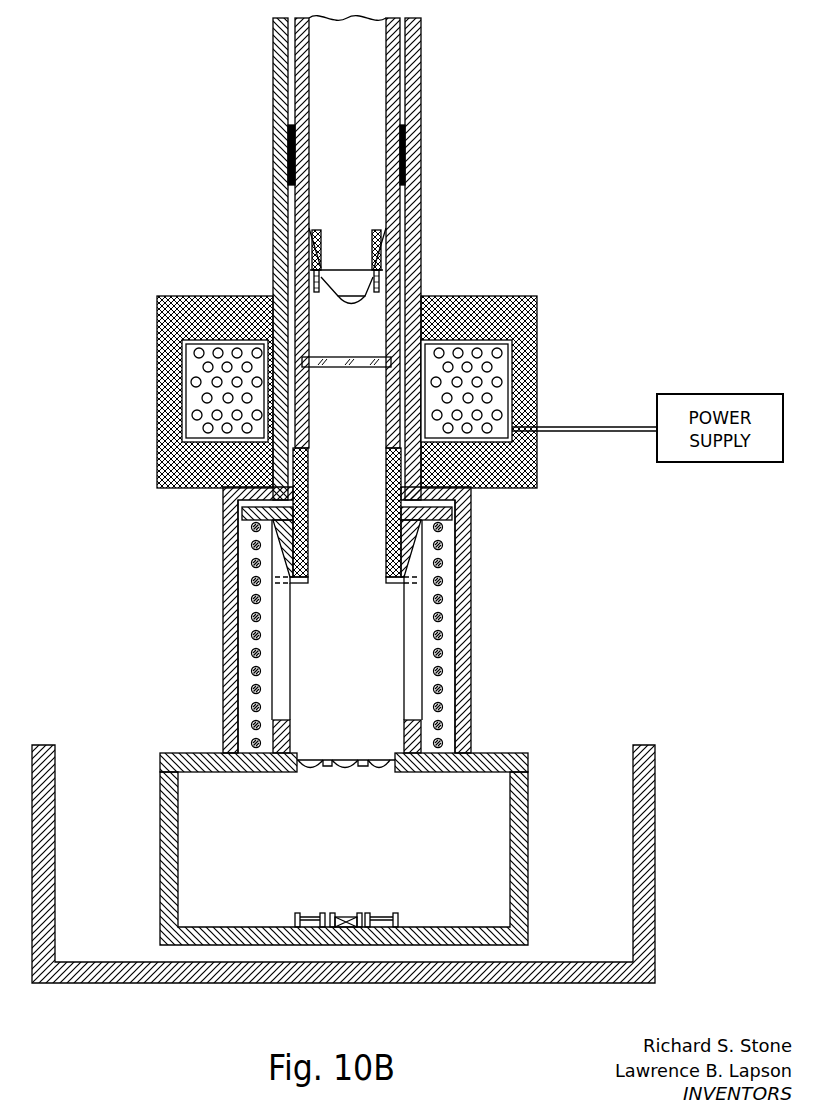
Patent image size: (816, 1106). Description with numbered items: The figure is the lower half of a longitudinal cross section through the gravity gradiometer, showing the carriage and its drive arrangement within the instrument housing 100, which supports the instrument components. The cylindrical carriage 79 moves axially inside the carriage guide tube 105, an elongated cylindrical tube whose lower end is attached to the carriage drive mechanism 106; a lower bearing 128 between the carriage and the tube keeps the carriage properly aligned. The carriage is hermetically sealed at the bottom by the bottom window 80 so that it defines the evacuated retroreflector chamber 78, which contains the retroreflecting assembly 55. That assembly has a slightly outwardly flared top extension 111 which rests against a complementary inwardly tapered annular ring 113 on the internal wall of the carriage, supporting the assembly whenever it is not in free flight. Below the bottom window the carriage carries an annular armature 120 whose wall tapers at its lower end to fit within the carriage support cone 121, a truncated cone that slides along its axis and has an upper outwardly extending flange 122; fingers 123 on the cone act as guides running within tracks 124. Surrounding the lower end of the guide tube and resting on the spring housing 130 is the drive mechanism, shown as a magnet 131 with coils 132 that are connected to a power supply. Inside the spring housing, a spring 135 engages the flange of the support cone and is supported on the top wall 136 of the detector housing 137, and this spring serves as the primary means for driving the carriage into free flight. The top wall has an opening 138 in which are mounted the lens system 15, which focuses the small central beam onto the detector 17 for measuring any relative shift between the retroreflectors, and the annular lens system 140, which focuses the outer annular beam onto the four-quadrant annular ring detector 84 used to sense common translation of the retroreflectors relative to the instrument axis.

The lens system 15 is at (348, 748).
The detector 17 is at (343, 915).
The retroreflecting assembly 55 is at (336, 263).
The retroreflector chamber 78 is at (368, 200).
The carriage 79 is at (392, 70).
The bottom window 80 is at (363, 357).
The annular ring detector 84 is at (383, 915).
The instrument housing 100 is at (643, 770).
The carriage guide tube 105 is at (418, 105).
The carriage drive mechanism 106 is at (546, 309).
The flared top extension 111 is at (383, 233).
The annular ring 113 is at (302, 260).
The annular armature 120 is at (472, 498).
The carriage support cone 121 is at (400, 557).
The flange 122 is at (448, 517).
The fingers 123 is at (420, 586).
The tracks 124 is at (412, 627).
The lower bearing 128 is at (286, 157).
The spring housing 130 is at (460, 678).
The magnet 131 is at (528, 382).
The coils 132 is at (493, 353).
The spring 135 is at (438, 655).
The top wall 136 is at (500, 762).
The detector housing 137 is at (520, 830).
The opening 138 is at (363, 770).
The annular lens system 140 is at (305, 770).